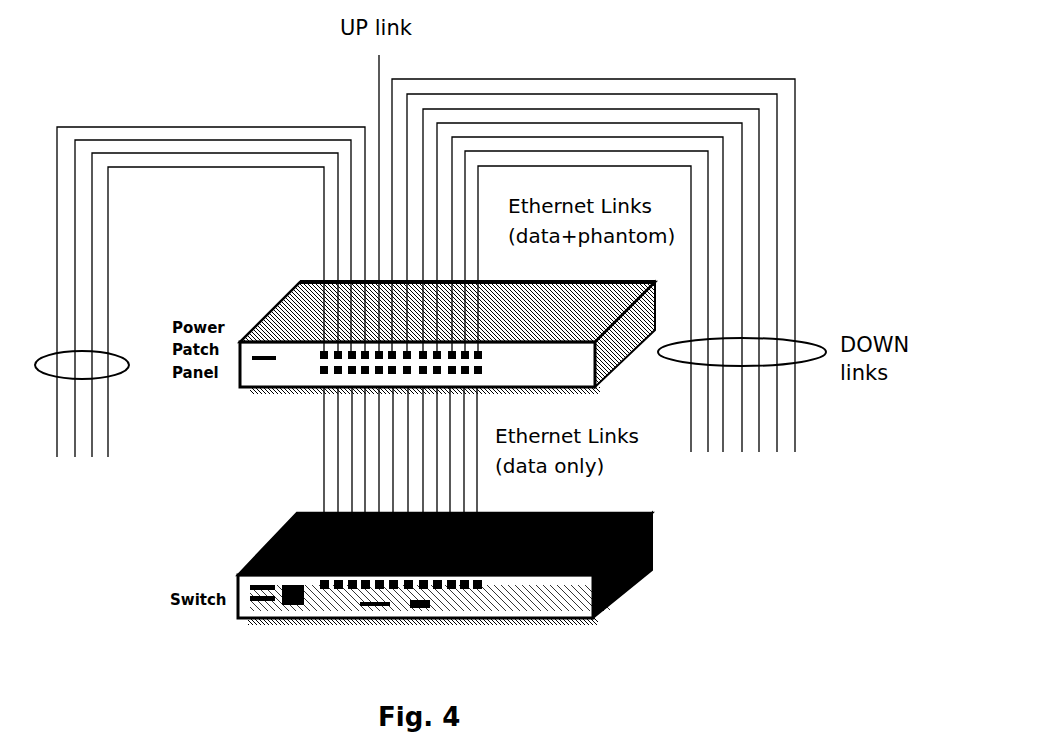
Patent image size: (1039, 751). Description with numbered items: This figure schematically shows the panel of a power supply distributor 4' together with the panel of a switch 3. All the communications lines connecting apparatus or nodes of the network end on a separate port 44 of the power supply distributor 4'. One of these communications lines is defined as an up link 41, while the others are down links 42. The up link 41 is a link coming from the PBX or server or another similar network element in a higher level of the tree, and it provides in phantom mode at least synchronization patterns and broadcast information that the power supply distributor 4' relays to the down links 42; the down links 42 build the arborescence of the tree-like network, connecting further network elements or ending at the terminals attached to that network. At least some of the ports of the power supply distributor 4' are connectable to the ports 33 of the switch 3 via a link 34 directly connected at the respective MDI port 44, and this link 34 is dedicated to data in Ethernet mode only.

The up link 41 is at (379, 57).
The down link 42 is at (48, 378).
The power supply distributor 4' is at (452, 350).
The port 44 is at (322, 355).
The link 34 is at (322, 467).
The switch 3 is at (634, 583).
The ports of the switch 33 is at (336, 588).